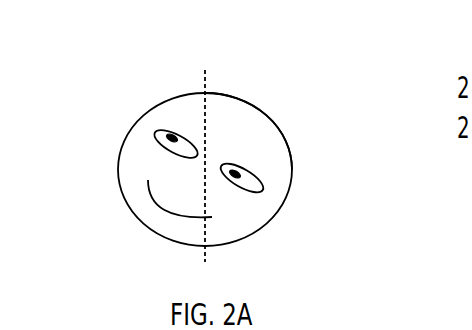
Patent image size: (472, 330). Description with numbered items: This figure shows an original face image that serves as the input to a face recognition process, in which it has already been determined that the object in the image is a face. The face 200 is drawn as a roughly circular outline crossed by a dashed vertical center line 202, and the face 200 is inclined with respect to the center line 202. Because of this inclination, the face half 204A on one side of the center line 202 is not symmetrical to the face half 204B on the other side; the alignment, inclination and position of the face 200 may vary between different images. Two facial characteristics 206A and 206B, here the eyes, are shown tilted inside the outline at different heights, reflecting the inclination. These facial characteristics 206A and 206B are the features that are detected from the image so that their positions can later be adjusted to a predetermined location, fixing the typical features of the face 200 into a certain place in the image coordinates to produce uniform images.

The face 200 is at (118, 165).
The center line 202 is at (202, 75).
The face half 204A is at (168, 241).
The face half 204B is at (272, 120).
The facial characteristic 206A is at (153, 131).
The facial characteristic 206B is at (264, 177).